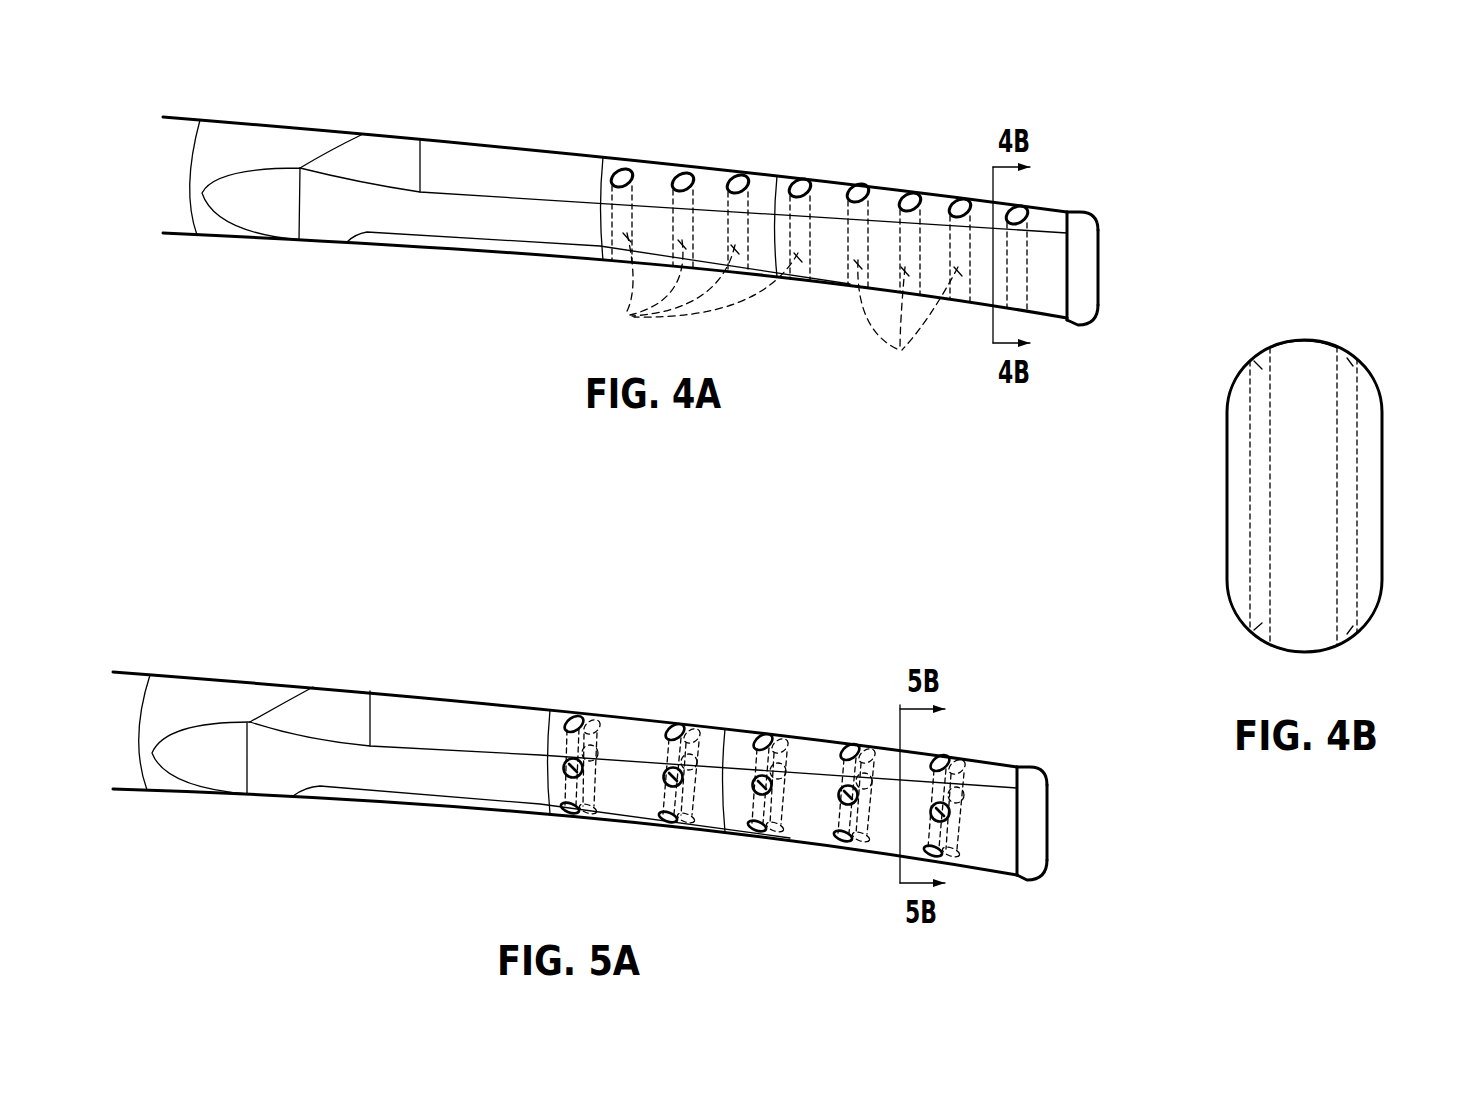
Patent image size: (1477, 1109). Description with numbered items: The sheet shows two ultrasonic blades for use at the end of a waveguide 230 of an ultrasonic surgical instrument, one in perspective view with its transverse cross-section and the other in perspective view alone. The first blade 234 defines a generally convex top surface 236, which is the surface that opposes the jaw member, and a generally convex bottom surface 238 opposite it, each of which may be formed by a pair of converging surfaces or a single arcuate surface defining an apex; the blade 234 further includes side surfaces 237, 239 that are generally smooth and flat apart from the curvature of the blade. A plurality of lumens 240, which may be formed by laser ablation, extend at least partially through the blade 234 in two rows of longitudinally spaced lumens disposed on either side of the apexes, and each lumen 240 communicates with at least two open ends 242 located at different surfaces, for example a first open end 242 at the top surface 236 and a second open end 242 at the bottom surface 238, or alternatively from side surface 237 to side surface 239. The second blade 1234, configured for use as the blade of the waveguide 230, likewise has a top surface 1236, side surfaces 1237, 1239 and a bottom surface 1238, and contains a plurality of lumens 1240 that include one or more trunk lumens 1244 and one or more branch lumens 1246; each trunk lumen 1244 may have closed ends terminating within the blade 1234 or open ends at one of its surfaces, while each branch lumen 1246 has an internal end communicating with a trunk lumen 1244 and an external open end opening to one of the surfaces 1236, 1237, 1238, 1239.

In FIG. 4A, the waveguide 230 is at (183, 127).
In FIG. 4A, the blade 234 is at (838, 142).
In FIG. 4B, the blade 234 is at (1178, 484).
In FIG. 4A, the top surface 236 is at (1053, 225).
In FIG. 4B, the top surface 236 is at (1323, 335).
In FIG. 4A, the side surface 237 is at (1038, 270).
In FIG. 4B, the side surface 237 is at (1385, 491).
In FIG. 4A, the bottom surface 238 is at (1061, 324).
In FIG. 4B, the bottom surface 238 is at (1266, 646).
In FIG. 4A, the side surface 239 is at (1102, 268).
In FIG. 4B, the side surface 239 is at (1225, 559).
In FIG. 4A, the lumens 240 is at (632, 313).
In FIG. 4B, the lumens 240 is at (1262, 435).
In FIG. 4A, the open ends 242 is at (635, 161).
In FIG. 4B, the open ends 242 is at (1262, 365).
In FIG. 5A, the blade 1234 is at (468, 686).
In FIG. 5A, the top surface 1236 is at (994, 772).
In FIG. 5A, the side surface 1237 is at (1008, 798).
In FIG. 5A, the bottom surface 1238 is at (1043, 879).
In FIG. 5A, the side surface 1239 is at (1050, 817).
In FIG. 5A, the lumens 1240 is at (643, 816).
In FIG. 5A, the trunk lumen 1244 is at (566, 774).
In FIG. 5A, the branch lumen 1246 is at (612, 772).